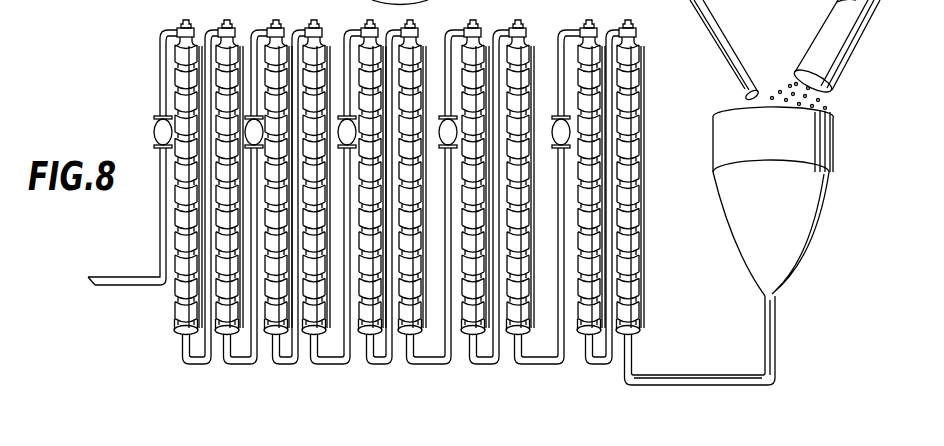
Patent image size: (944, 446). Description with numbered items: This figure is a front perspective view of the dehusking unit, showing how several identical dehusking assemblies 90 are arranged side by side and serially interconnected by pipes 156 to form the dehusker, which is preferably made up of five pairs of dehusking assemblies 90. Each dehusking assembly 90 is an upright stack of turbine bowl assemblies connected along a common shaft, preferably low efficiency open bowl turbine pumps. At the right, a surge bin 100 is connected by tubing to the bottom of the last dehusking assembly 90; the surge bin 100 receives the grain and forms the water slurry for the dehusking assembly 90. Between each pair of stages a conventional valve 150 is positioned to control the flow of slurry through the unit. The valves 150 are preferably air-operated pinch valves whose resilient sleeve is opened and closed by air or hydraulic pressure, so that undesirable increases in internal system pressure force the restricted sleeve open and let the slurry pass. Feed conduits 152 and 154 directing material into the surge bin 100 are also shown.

The dehusking assembly 90 is at (658, 308).
The surge bin 100 is at (809, 202).
The valve 150 is at (555, 133).
The feed tube 152 is at (722, 30).
The feed tube 154 is at (836, 46).
The pipes 156 is at (141, 240).